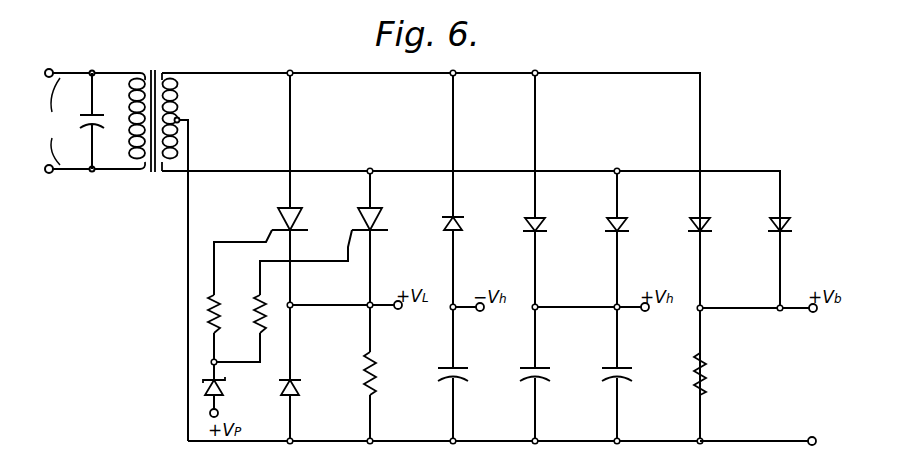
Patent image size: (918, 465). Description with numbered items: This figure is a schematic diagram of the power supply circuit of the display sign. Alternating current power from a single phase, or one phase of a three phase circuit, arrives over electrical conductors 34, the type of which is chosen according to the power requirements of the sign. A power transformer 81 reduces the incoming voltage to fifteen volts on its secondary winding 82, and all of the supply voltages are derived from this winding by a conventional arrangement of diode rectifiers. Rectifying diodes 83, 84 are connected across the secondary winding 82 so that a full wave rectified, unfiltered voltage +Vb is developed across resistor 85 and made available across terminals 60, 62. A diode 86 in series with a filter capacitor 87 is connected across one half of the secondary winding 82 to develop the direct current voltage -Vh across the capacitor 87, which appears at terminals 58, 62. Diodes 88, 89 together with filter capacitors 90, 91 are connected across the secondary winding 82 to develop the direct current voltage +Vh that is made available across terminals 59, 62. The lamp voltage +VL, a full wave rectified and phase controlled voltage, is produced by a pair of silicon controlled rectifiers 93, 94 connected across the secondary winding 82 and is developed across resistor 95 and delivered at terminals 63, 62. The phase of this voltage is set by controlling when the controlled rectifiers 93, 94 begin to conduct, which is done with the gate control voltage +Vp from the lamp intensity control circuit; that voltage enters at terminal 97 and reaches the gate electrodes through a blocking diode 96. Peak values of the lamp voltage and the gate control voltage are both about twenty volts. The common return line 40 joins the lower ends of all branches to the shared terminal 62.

The electrical conductors 34 is at (46, 121).
The power transformer 81 is at (152, 173).
The secondary winding 82 is at (179, 93).
The silicon controlled rectifier 93 is at (283, 215).
The silicon controlled rectifier 94 is at (376, 212).
The diode 86 is at (448, 226).
The diode 88 is at (541, 225).
The diode 89 is at (624, 224).
The rectifying diode 83 is at (706, 224).
The rectifying diode 84 is at (785, 223).
The filter capacitor 87 is at (457, 366).
The filter capacitor 90 is at (540, 366).
The filter capacitor 91 is at (611, 369).
The resistor 95 is at (377, 388).
The blocking diode 96 is at (220, 390).
The terminal 97 is at (209, 413).
The resistor 85 is at (707, 374).
The terminal 63 is at (399, 319).
The terminal 58 is at (483, 311).
The terminal 59 is at (646, 311).
The terminal 60 is at (813, 312).
The terminal 62 is at (812, 437).
The ground line 40 is at (743, 441).